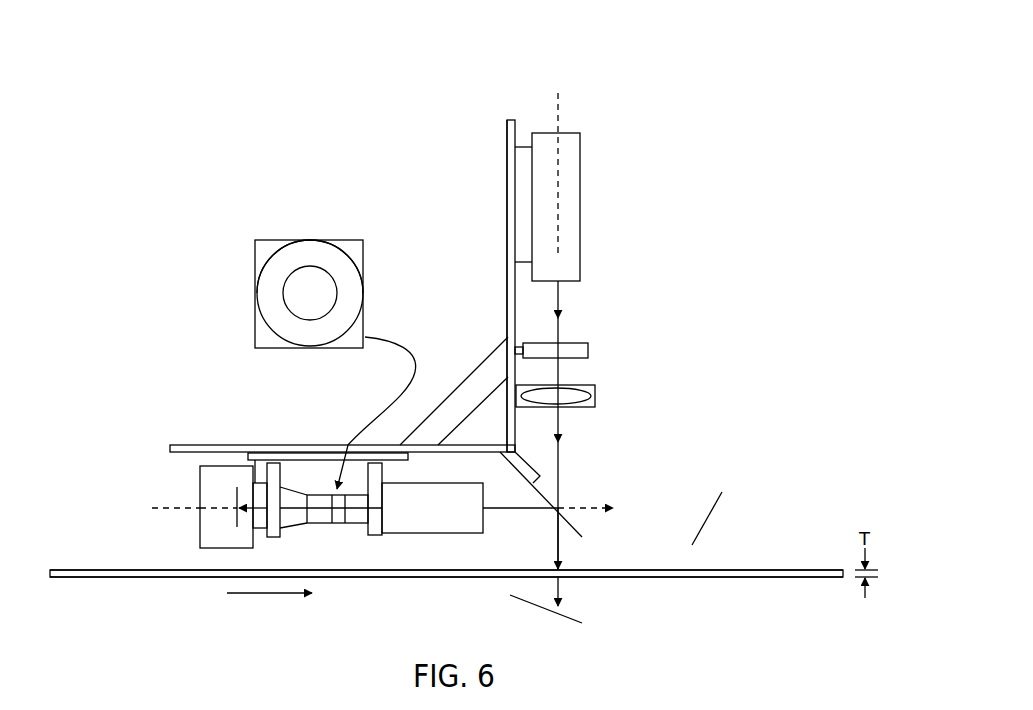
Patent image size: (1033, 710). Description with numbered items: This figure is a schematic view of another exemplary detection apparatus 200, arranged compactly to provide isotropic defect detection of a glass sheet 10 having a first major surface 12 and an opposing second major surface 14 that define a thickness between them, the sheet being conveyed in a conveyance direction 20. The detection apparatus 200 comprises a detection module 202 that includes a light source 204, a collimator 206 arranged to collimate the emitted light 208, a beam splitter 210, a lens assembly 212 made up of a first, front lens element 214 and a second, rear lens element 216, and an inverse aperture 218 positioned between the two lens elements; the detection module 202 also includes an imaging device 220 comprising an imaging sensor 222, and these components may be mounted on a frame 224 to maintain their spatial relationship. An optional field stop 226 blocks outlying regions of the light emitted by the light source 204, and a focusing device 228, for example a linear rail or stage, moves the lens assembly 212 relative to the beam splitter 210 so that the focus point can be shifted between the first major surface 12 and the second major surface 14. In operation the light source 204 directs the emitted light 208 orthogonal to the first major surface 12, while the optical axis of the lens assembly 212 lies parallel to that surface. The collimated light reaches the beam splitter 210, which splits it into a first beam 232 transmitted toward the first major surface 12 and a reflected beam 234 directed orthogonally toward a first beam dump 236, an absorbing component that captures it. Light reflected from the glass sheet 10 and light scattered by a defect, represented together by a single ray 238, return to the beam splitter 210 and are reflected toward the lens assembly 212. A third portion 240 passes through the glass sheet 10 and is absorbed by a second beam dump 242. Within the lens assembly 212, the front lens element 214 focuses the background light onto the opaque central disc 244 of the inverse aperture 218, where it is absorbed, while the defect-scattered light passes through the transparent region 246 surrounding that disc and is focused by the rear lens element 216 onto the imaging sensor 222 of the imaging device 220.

The glass sheet 10 is at (718, 567).
The first major surface 12 is at (795, 569).
The second major surface 14 is at (110, 578).
The conveyance direction 20 is at (269, 608).
The detection apparatus 200 is at (746, 190).
The detection module 202 is at (681, 274).
The light source 204 is at (581, 198).
The collimator 206 is at (595, 407).
The emitted light 208 is at (558, 300).
The beam splitter 210 is at (584, 531).
The lens assembly 212 is at (300, 479).
The front lens element 214 is at (437, 535).
The rear lens element 216 is at (259, 478).
The inverse aperture 218 is at (283, 223).
The imaging device 220 is at (200, 528).
The imaging sensor 222 is at (240, 492).
The frame 224 is at (558, 120).
The field stop 226 is at (588, 350).
The focusing device 228 is at (559, 415).
The first beam 232 is at (558, 543).
The reflected beam 234 is at (580, 505).
The first beam dump 236 is at (713, 497).
The reflected and scattered light ray 238 is at (518, 510).
The transmitted light portion 240 is at (558, 585).
The second beam dump 242 is at (510, 597).
The opaque central disc 244 is at (283, 297).
The transparent region 246 is at (302, 250).